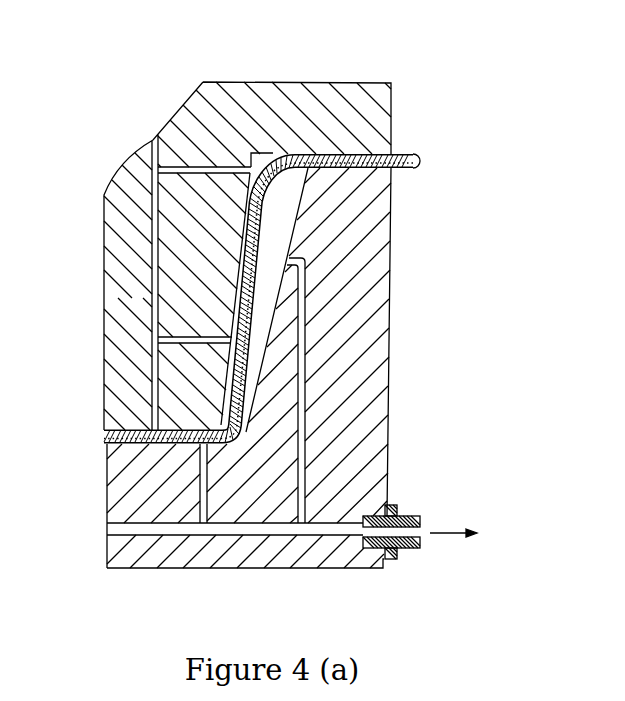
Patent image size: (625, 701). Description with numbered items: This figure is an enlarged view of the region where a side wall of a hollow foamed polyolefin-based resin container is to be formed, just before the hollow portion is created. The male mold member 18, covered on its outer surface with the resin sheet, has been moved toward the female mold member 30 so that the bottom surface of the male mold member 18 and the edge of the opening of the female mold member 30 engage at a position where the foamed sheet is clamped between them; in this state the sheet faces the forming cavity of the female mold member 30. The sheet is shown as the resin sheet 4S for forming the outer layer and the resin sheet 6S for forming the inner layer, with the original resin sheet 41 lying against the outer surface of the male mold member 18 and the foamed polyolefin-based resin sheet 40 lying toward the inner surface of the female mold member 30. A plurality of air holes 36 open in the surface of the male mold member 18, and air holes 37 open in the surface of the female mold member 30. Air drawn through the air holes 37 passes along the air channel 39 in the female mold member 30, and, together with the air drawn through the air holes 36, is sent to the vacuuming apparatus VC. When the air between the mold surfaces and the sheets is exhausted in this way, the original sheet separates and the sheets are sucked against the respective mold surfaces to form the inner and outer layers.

The male mold member 18 is at (177, 268).
The female mold member 30 is at (386, 322).
The air hole 36 is at (196, 118).
The air hole 37 is at (285, 250).
The air channel 39 is at (334, 536).
The foamed polyolefin-based resin sheet 40 is at (285, 205).
The original resin sheet 41 is at (269, 151).
The resin sheet for forming the outer layer 4S is at (417, 163).
The resin sheet for forming the inner layer 6S is at (403, 152).
The vacuuming apparatus VC is at (474, 534).